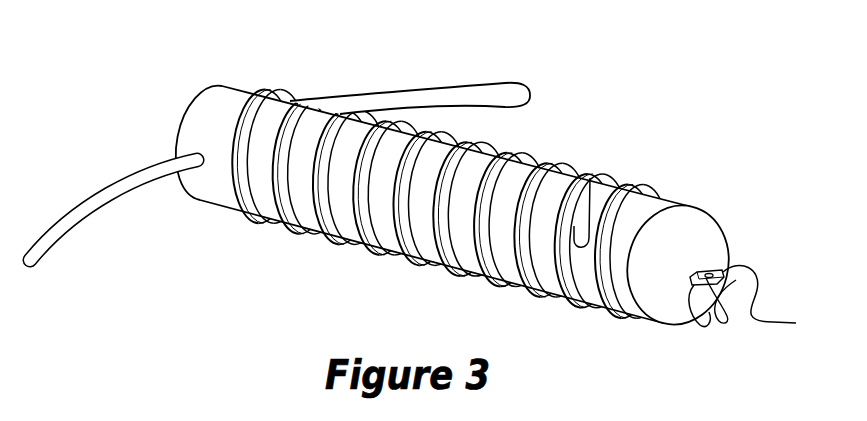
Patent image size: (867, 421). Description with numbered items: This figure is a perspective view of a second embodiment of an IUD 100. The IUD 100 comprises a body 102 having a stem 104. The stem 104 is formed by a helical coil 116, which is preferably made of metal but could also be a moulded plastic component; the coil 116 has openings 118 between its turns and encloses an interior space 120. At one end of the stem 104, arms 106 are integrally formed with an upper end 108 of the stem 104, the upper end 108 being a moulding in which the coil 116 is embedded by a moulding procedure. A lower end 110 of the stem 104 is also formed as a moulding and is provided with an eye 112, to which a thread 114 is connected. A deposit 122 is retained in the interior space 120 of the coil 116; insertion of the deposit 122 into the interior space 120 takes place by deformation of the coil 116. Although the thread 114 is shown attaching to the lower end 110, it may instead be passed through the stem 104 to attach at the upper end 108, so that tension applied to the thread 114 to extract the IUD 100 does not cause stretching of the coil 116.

The IUD 100 is at (557, 99).
The body 102 is at (256, 85).
The stem 104 is at (515, 160).
The arms 106 is at (90, 194).
The upper end 108 is at (188, 128).
The lower end 110 is at (692, 226).
The eye 112 is at (697, 287).
The thread 114 is at (775, 322).
The helical coil 116 is at (313, 233).
The openings 118 is at (388, 223).
The interior space 120 is at (590, 178).
The deposit 122 is at (550, 200).